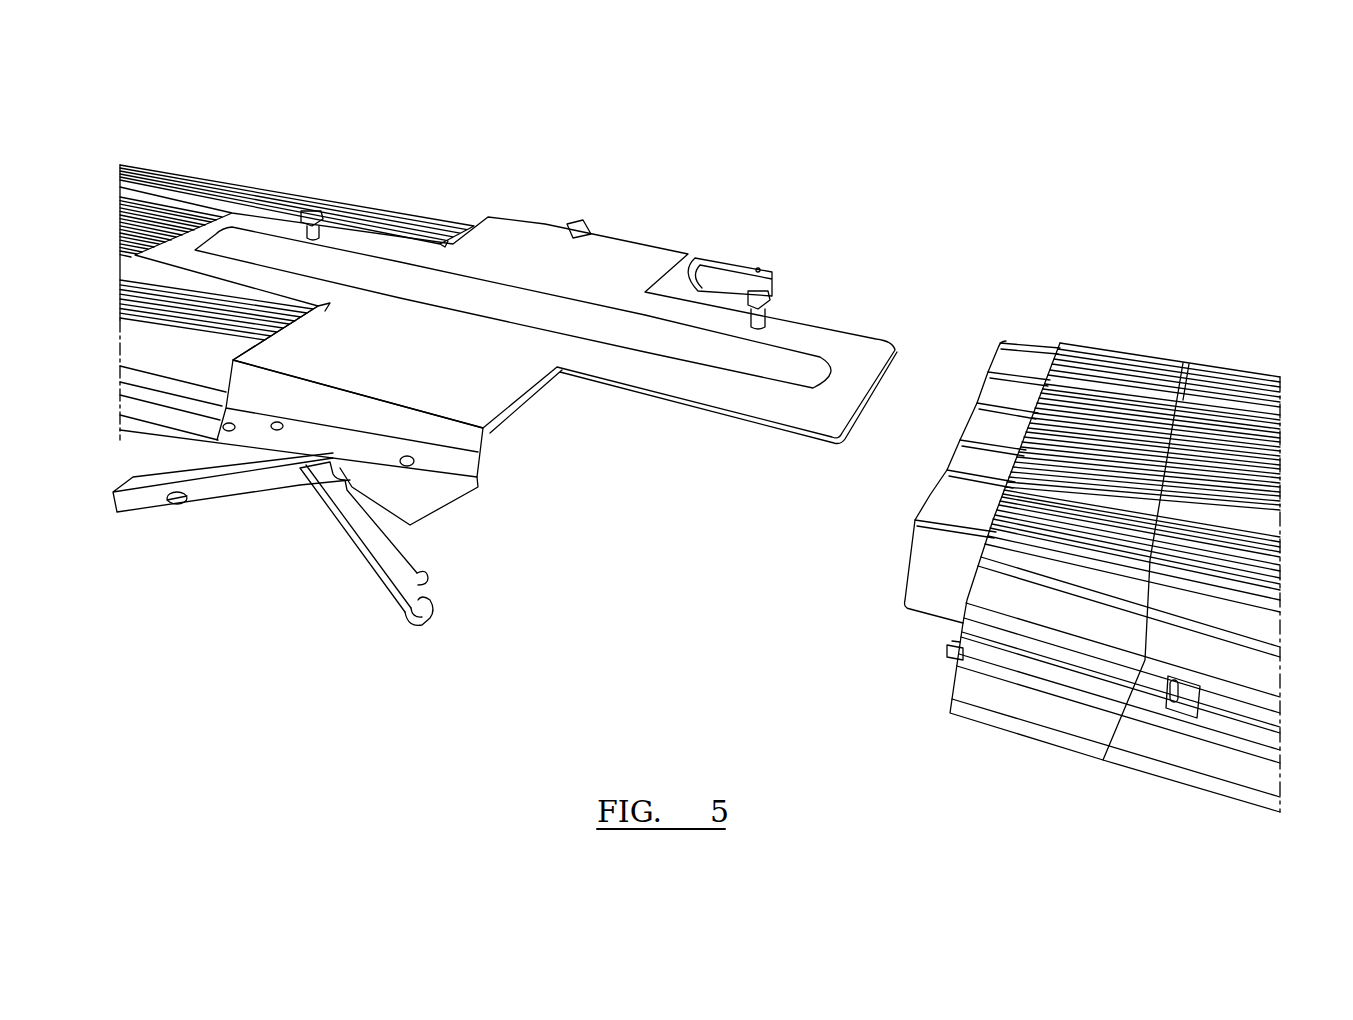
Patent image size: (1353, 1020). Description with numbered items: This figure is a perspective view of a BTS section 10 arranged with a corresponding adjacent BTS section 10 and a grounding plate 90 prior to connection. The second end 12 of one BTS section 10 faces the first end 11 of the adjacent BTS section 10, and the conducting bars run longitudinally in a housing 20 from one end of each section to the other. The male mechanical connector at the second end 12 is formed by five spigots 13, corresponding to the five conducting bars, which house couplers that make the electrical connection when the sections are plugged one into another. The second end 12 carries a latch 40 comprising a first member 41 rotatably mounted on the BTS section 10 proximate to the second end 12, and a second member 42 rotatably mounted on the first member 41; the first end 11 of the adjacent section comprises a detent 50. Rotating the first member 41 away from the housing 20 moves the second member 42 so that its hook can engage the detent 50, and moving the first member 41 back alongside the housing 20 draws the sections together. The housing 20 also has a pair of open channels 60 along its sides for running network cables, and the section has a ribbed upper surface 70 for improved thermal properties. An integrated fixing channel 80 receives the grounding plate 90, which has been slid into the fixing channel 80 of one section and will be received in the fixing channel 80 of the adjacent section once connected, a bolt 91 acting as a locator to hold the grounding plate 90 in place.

The BTS section 10 is at (428, 200).
The first end 11 is at (1068, 343).
The second end 12 is at (410, 502).
The spigots 13 is at (1000, 345).
The housing 20 is at (223, 190).
The latch 40 is at (568, 198).
The first member 41 is at (567, 227).
The second member 42 is at (775, 278).
The detent 50 is at (1173, 697).
The channels 60 is at (200, 368).
The ribbed upper surface 70 is at (148, 297).
The fixing channel 80 is at (352, 228).
The grounding plate 90 is at (855, 348).
The bolt 91 is at (313, 210).